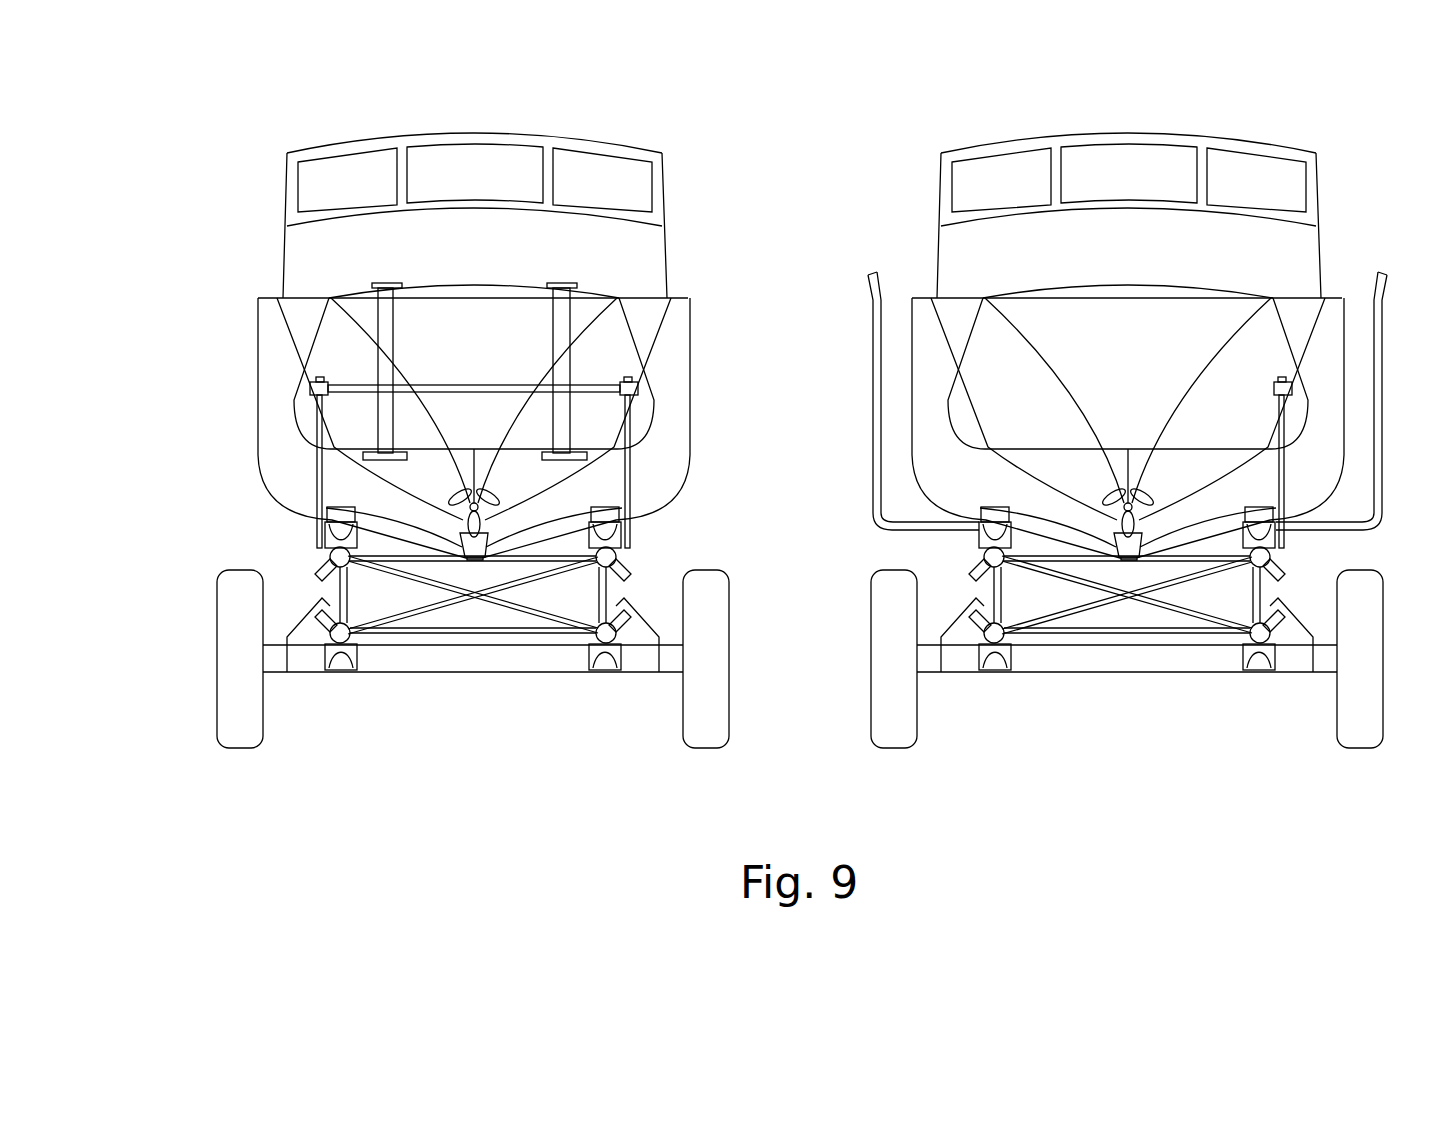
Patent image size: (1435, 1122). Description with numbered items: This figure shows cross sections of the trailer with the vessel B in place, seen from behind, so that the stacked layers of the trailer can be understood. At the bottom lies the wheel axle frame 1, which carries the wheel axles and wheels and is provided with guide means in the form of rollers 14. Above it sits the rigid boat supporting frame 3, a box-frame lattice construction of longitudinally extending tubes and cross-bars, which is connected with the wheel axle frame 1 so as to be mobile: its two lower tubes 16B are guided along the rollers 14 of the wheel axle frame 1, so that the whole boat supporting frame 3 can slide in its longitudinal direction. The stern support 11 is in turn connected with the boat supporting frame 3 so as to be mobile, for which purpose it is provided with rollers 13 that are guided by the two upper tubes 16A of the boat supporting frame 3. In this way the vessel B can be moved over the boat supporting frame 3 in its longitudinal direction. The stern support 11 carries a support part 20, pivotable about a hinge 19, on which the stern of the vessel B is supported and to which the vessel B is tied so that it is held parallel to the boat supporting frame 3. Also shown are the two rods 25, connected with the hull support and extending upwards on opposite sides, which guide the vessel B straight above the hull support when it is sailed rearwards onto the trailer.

The vessel B is at (486, 248).
The wheel axle frame 1 is at (560, 663).
The boat supporting frame 3 is at (478, 631).
The stern support 11 is at (432, 566).
The rollers 13 is at (337, 535).
The rollers 14 is at (342, 650).
The upper tubes 16A is at (988, 553).
The lower tubes 16B is at (988, 634).
The hinge 19 is at (306, 378).
The support part 20 is at (378, 305).
The rods 25 is at (876, 355).